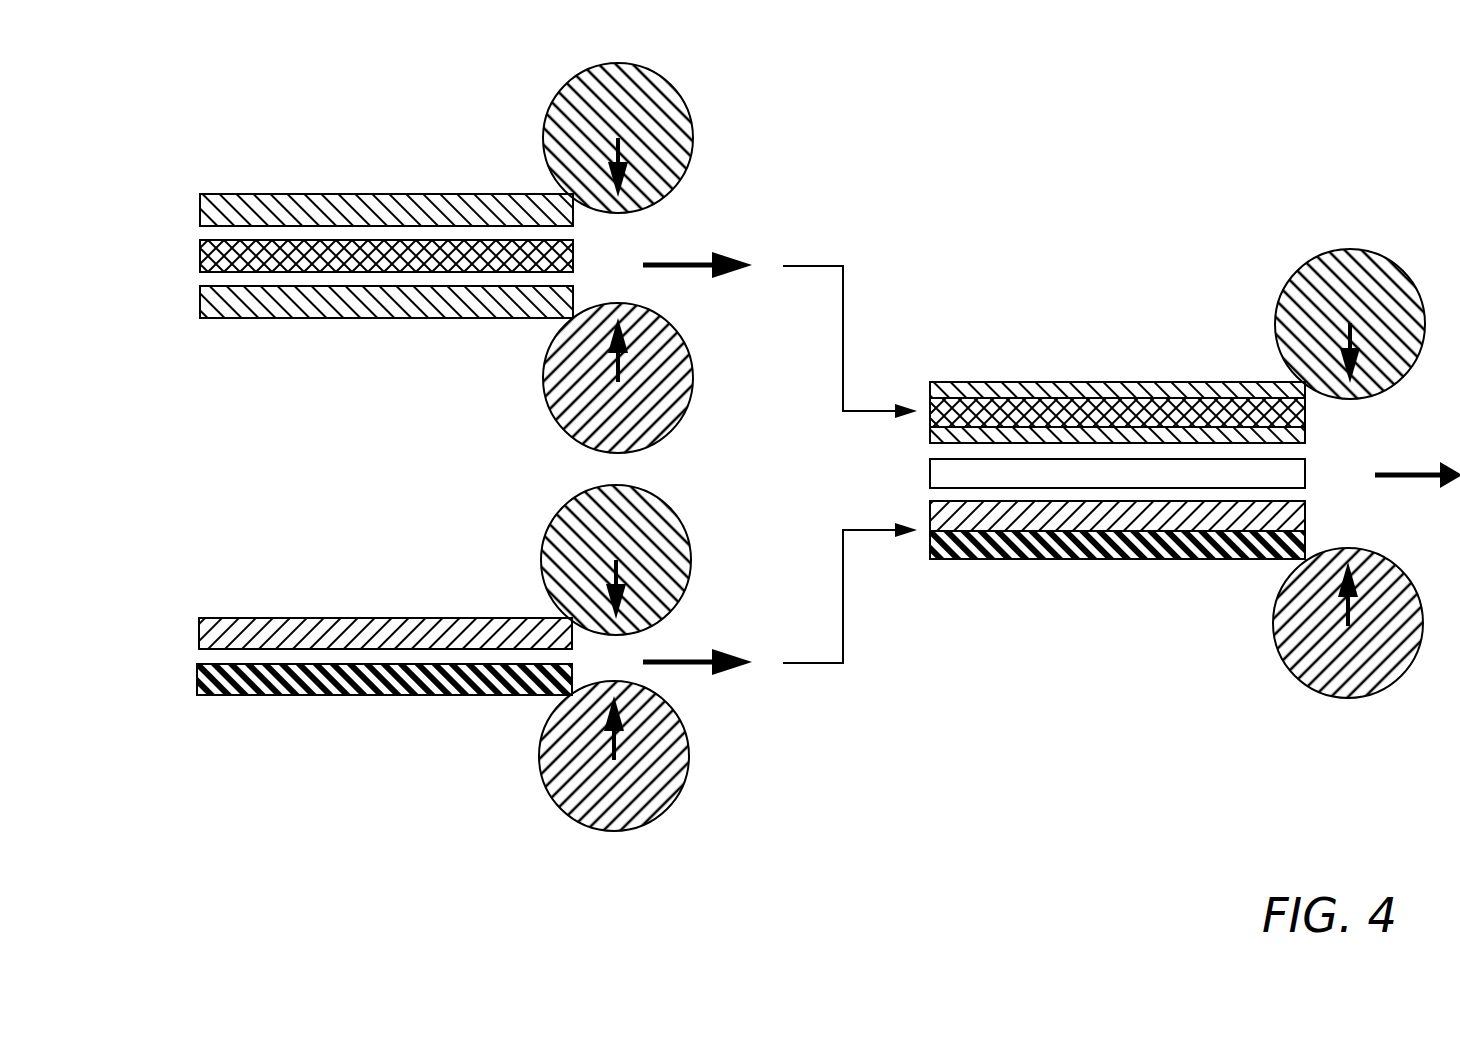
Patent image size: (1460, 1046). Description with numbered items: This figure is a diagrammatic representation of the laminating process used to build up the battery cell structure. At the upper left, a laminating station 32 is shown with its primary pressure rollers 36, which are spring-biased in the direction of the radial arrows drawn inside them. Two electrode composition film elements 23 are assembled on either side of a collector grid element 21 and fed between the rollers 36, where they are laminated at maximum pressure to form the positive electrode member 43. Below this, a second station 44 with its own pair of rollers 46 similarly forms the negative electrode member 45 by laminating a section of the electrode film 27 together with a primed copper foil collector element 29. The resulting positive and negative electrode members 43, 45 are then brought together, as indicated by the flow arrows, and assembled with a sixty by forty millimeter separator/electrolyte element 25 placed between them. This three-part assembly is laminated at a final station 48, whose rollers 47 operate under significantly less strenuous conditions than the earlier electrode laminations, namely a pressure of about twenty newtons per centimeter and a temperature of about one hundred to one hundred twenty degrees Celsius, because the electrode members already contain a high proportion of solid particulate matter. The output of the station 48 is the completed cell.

The collector grid element 21 is at (198, 258).
The electrode composition film elements 23 is at (243, 200).
The separator/electrolyte element 25 is at (930, 470).
The electrode film 27 is at (230, 617).
The primed copper foil collector element 29 is at (345, 694).
The laminating station 32 is at (503, 129).
The primary pressure rollers 36 is at (669, 104).
The positive electrode member 43 is at (1025, 360).
The station 44 is at (500, 773).
The negative electrode member 45 is at (1027, 580).
The pressure rollers 46 is at (553, 522).
The rollers 47 is at (1367, 262).
The station 48 is at (1215, 640).